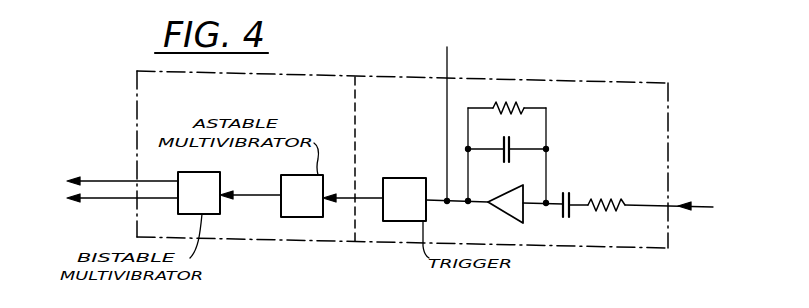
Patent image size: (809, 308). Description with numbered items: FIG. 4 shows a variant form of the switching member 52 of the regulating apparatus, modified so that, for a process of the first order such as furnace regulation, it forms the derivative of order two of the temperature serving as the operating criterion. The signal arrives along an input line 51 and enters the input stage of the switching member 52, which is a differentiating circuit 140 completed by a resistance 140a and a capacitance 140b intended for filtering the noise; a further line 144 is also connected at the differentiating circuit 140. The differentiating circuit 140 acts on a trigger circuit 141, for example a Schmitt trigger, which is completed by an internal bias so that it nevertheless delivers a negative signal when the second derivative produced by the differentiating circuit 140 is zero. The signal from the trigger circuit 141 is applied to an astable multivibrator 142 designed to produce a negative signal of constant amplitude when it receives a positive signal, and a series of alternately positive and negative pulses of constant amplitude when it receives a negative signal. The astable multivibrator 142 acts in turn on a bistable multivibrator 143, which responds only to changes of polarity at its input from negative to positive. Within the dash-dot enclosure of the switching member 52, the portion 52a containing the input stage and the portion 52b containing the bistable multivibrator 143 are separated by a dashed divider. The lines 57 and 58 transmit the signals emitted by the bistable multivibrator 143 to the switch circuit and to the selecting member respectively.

The input signal line 51 is at (703, 203).
The switching member 52 is at (411, 249).
The trigger input section 52a is at (556, 242).
The trigger output section 52b is at (266, 235).
The line 57 is at (98, 178).
The line 58 is at (100, 200).
The differentiating circuit 140 is at (498, 213).
The resistance 140a is at (608, 193).
The capacitance 140b is at (502, 153).
The trigger circuit 141 is at (404, 199).
The astable multivibrator 142 is at (302, 196).
The bistable multivibrator 143 is at (199, 193).
The supply line 144 is at (450, 57).